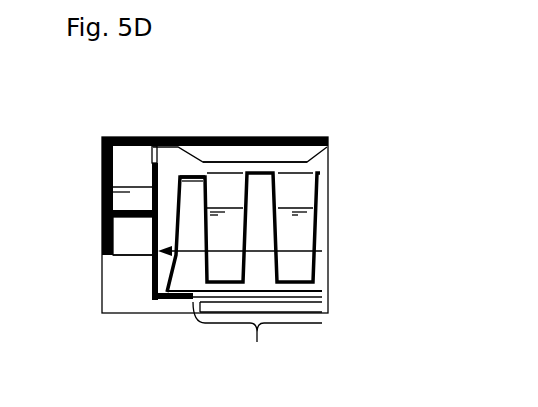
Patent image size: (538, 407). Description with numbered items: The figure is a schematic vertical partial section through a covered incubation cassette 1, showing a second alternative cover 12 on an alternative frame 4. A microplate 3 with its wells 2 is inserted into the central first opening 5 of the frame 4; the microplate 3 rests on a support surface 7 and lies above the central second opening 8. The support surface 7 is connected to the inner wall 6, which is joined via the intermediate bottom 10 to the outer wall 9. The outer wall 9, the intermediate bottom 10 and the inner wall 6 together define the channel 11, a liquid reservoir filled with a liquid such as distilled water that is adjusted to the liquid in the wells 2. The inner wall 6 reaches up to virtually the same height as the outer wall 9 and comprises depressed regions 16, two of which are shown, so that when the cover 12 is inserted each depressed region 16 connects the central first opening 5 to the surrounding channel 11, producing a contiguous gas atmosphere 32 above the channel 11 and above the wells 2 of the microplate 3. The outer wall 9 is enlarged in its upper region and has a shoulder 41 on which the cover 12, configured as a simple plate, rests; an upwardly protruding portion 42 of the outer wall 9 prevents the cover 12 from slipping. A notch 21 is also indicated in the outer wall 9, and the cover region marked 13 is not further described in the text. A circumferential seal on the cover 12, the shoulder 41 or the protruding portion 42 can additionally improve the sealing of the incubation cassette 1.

The incubation cassette 1 is at (360, 125).
The wells 2 is at (260, 194).
The microplate 3 is at (313, 270).
The frame 4 is at (68, 258).
The central first opening 5 is at (240, 242).
The inner wall 6 is at (158, 180).
The support surface 7 is at (187, 298).
The central second opening 8 is at (257, 335).
The outer wall 9 is at (100, 182).
The intermediate bottom 10 is at (120, 208).
The channel 11 is at (192, 168).
The cover 12 is at (72, 132).
The cover 13 is at (296, 135).
The depressed regions 16 is at (156, 147).
The notch 21 is at (115, 262).
The contiguous gas atmosphere 32 is at (227, 167).
The shoulder 41 is at (107, 137).
The upwardly protruding portion 42 is at (92, 147).